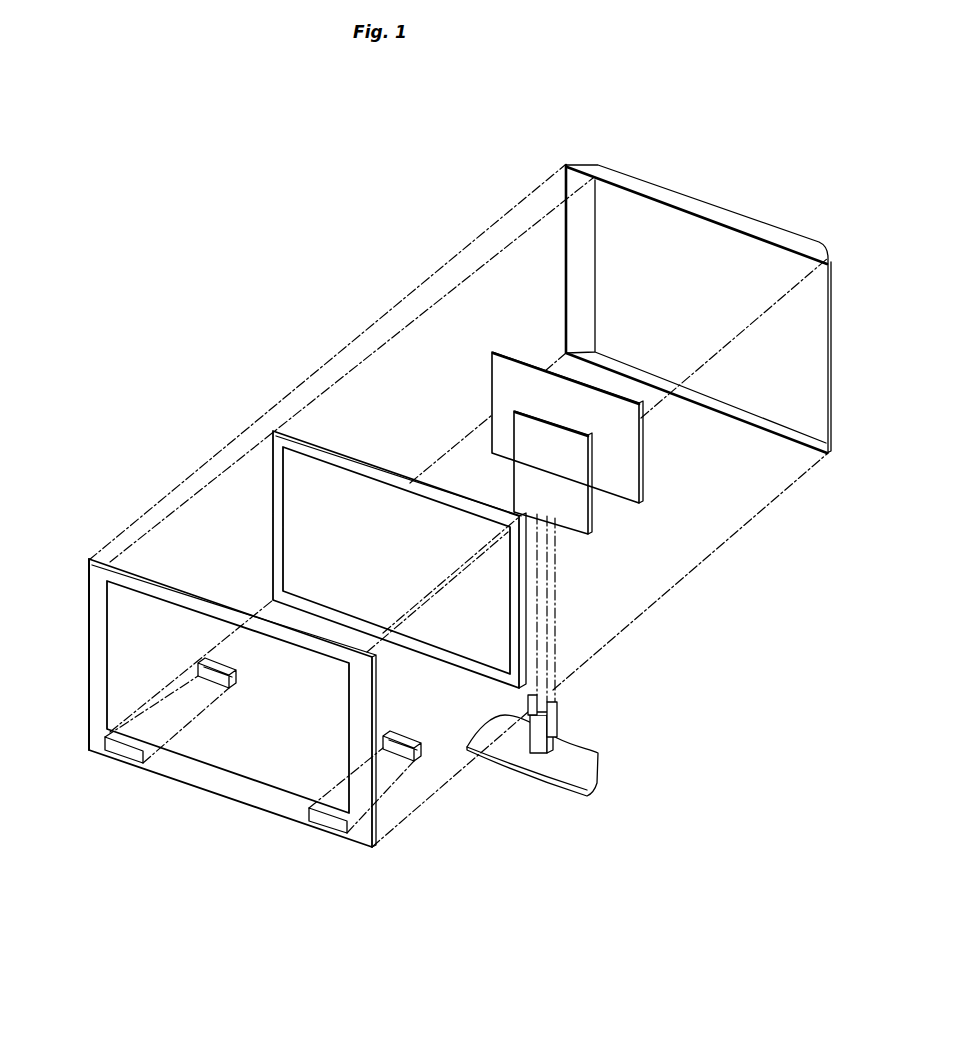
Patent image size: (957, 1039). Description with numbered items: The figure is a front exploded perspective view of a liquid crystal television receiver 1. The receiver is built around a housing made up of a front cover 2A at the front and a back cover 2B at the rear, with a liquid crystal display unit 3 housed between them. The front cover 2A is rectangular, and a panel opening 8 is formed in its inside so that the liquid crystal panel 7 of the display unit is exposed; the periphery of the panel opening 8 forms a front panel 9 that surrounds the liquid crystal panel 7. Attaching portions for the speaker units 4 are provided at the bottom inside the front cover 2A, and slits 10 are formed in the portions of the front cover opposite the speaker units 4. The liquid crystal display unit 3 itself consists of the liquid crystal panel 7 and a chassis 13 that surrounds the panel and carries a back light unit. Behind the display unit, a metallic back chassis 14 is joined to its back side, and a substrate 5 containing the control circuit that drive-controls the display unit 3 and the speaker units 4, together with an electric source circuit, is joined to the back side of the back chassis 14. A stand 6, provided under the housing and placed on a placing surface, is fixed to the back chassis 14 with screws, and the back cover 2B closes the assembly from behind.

The liquid crystal television receiver 1 is at (273, 325).
The front cover 2A is at (95, 557).
The back cover 2B is at (778, 229).
The liquid crystal display unit 3 is at (392, 451).
The speaker units 4 is at (228, 672).
The substrate 5 is at (642, 468).
The stand 6 is at (597, 783).
The liquid crystal panel 7 is at (396, 560).
The panel opening 8 is at (107, 666).
The front panel 9 is at (95, 708).
The slits 10 is at (122, 753).
The chassis 13 is at (314, 440).
The back chassis 14 is at (587, 528).